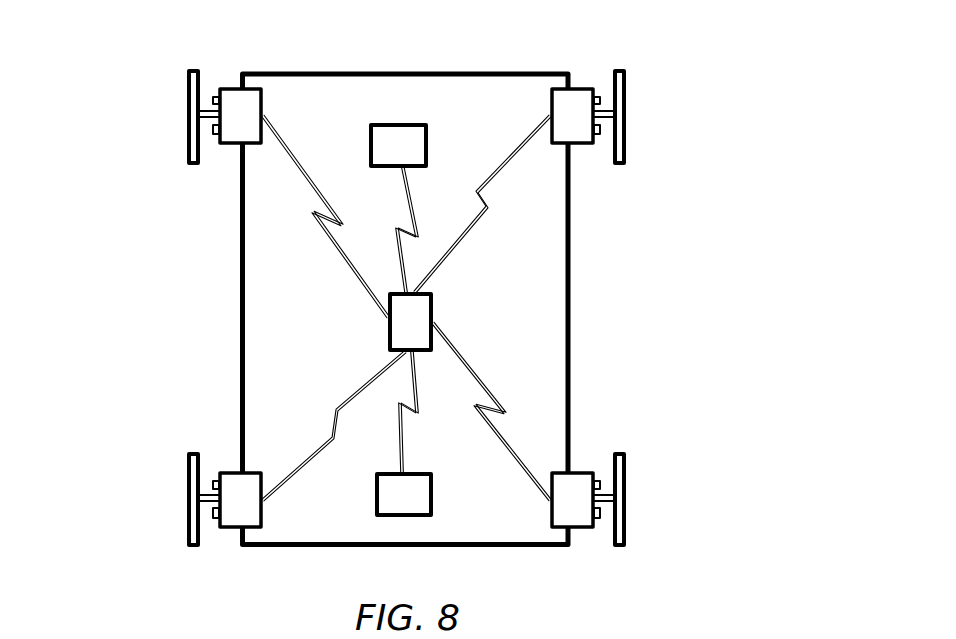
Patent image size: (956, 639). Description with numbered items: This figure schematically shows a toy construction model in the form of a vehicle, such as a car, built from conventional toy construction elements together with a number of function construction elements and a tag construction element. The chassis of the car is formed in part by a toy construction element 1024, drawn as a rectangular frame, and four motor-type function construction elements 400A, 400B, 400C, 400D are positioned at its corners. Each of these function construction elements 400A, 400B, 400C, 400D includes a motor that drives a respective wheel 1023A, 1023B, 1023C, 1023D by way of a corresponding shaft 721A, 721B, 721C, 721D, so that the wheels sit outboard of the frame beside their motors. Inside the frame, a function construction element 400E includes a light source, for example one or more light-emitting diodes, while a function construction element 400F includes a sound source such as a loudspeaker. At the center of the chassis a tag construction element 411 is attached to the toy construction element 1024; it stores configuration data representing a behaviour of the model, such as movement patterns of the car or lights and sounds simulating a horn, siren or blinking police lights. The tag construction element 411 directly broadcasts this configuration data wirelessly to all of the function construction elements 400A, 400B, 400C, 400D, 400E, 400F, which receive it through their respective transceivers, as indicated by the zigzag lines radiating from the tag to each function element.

The function construction element 400A is at (233, 86).
The function construction element 400B is at (573, 87).
The function construction element 400C is at (573, 470).
The function construction element 400D is at (232, 470).
The function construction element 400E is at (403, 123).
The function construction element 400F is at (405, 517).
The tag construction element 411 is at (433, 302).
The shaft 721A is at (212, 120).
The shaft 721B is at (608, 118).
The shaft 721C is at (608, 503).
The shaft 721D is at (212, 503).
The wheel 1023A is at (187, 88).
The wheel 1023B is at (630, 147).
The wheel 1023C is at (630, 532).
The wheel 1023D is at (187, 473).
The toy construction element 1024 is at (241, 356).